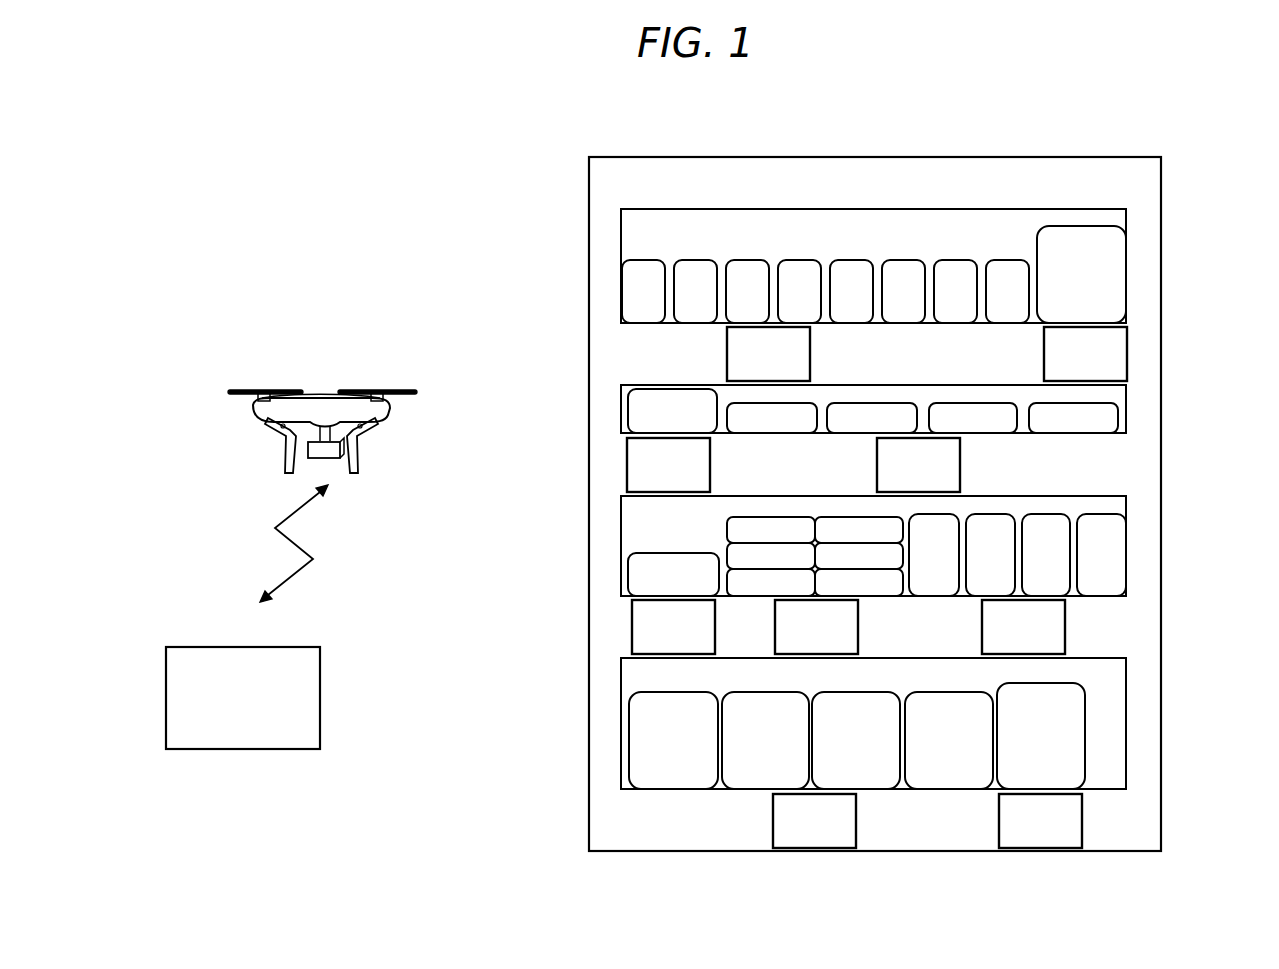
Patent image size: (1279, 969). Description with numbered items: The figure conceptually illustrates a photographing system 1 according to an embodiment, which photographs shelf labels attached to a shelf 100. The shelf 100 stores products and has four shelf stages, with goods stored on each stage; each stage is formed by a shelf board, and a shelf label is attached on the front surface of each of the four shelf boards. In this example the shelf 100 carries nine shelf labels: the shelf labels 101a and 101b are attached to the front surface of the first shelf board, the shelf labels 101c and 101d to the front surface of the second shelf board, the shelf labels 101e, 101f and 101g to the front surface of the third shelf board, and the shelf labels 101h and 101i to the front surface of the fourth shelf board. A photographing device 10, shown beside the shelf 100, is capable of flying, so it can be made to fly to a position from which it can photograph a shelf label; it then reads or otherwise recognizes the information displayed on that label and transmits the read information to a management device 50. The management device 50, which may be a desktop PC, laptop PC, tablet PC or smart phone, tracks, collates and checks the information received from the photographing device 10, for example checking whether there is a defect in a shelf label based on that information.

The photographing system 1 is at (437, 205).
The photographing device 10 is at (323, 397).
The management device 50 is at (320, 696).
The shelf 100 is at (793, 157).
The shelf label 101a is at (727, 357).
The shelf label 101b is at (1127, 357).
The shelf label 101c is at (627, 467).
The shelf label 101d is at (960, 470).
The shelf label 101e is at (632, 622).
The shelf label 101f is at (845, 654).
The shelf label 101g is at (1065, 622).
The shelf label 101h is at (817, 848).
The shelf label 101i is at (1042, 848).